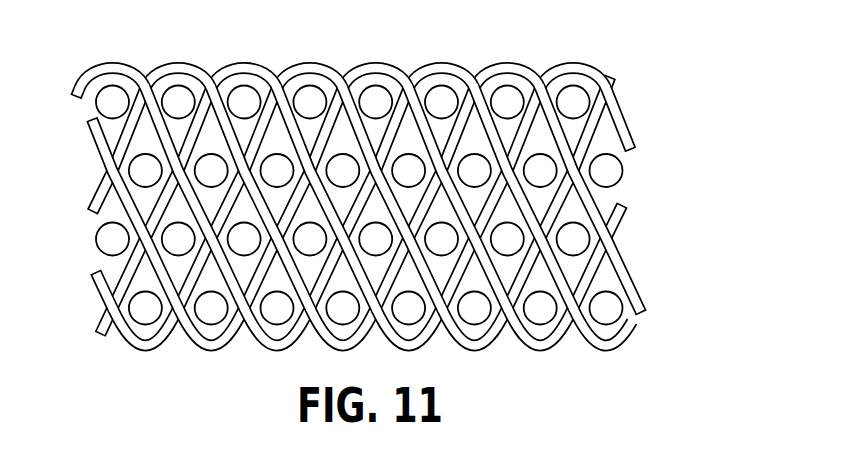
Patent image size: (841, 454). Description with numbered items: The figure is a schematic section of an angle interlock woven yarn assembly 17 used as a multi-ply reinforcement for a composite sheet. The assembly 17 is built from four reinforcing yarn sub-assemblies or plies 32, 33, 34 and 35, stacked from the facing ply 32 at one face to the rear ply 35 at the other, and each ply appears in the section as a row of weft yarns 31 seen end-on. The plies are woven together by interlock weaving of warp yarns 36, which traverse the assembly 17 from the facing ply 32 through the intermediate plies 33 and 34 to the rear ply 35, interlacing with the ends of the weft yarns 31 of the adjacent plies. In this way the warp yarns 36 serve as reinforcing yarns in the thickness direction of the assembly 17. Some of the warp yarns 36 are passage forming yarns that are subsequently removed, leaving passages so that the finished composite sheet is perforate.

The assembly 17 is at (382, 181).
The weft yarns 31 is at (382, 171).
The facing ply 32 is at (636, 102).
The ply 33 is at (641, 170).
The ply 34 is at (639, 238).
The rear ply 35 is at (651, 306).
The warp yarns 36 is at (126, 76).